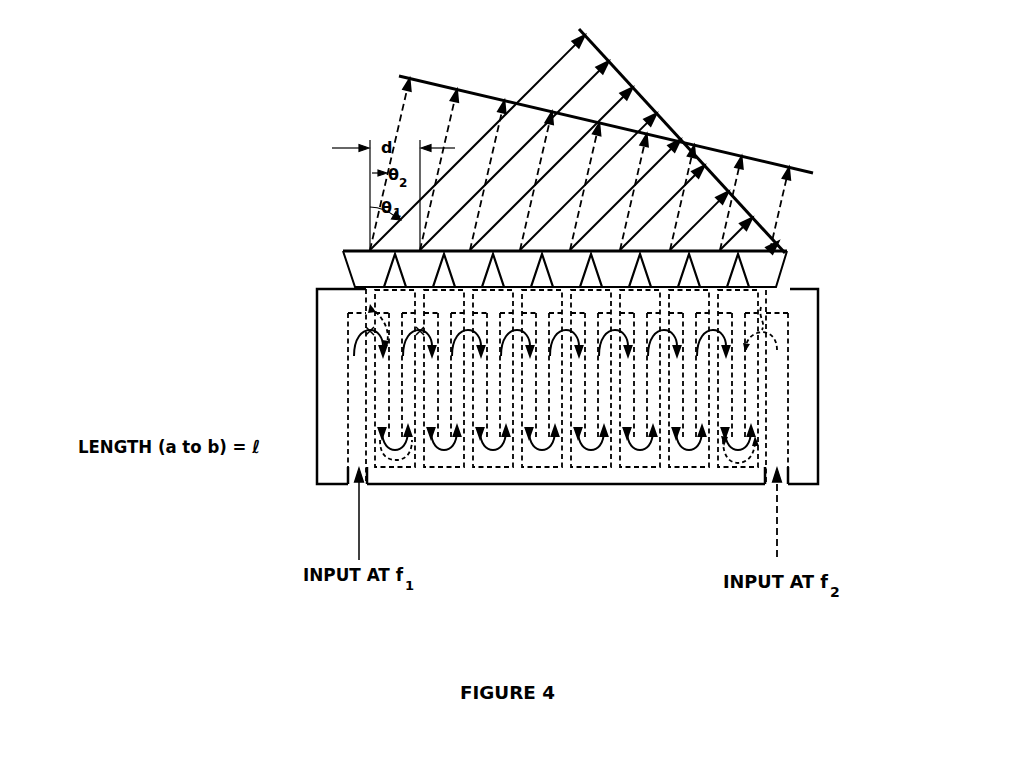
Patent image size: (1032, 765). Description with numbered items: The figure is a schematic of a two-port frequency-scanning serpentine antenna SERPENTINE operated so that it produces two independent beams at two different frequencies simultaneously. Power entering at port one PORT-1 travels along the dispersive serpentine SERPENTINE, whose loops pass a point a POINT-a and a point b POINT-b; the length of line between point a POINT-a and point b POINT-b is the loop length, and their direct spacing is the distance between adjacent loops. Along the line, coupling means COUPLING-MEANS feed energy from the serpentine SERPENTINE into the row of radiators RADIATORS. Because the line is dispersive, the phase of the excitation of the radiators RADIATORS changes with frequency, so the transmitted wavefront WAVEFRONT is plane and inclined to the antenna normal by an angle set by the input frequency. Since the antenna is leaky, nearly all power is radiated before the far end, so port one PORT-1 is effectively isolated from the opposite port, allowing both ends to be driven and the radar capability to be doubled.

The radiators RADIATORS is at (785, 267).
The coupling means COUPLING-MEANS is at (782, 303).
The transmitted wavefront WAVEFRONT is at (677, 131).
The serpentine antenna SERPENTINE is at (478, 408).
The point a POINT-a is at (368, 331).
The point b POINT-b is at (420, 332).
The port one PORT-1 is at (363, 491).